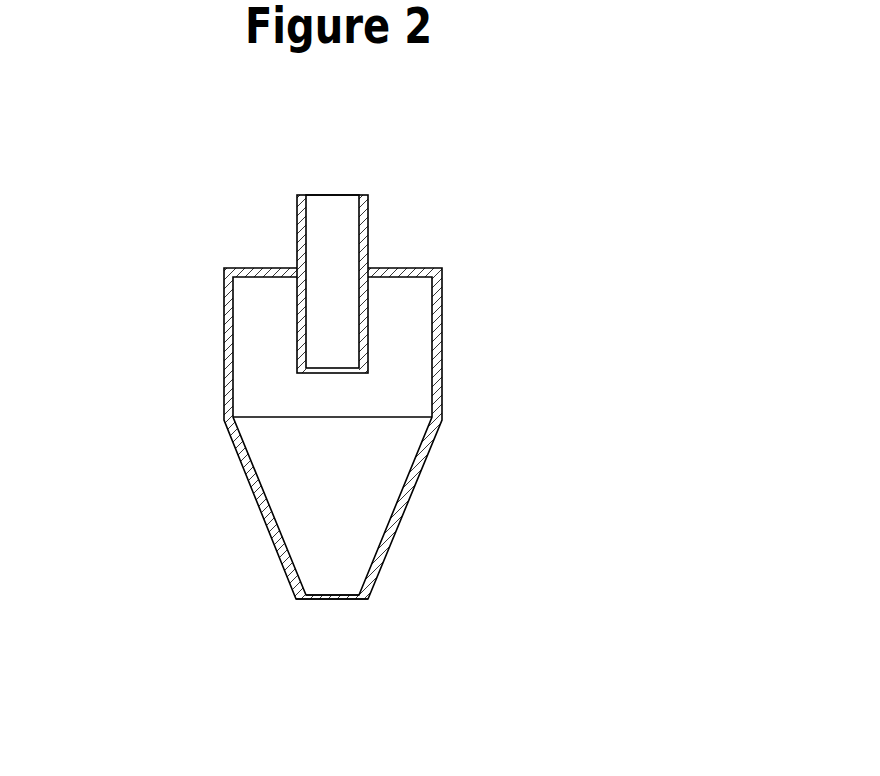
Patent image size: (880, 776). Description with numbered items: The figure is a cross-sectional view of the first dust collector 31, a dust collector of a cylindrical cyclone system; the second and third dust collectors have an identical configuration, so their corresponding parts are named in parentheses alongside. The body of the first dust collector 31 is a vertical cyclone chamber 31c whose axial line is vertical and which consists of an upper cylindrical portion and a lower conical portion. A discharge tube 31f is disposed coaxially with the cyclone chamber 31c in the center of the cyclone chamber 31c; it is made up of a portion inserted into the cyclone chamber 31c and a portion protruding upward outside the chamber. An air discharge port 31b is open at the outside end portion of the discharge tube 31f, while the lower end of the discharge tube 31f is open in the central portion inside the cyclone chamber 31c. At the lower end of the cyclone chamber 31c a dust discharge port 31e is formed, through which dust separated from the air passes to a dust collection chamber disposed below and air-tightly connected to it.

The first dust collector 31 is at (236, 251).
The air discharge port 31b is at (335, 195).
The cyclone chamber 31c is at (442, 387).
The dust discharge port 31e is at (330, 599).
The discharge tube 31f is at (370, 313).